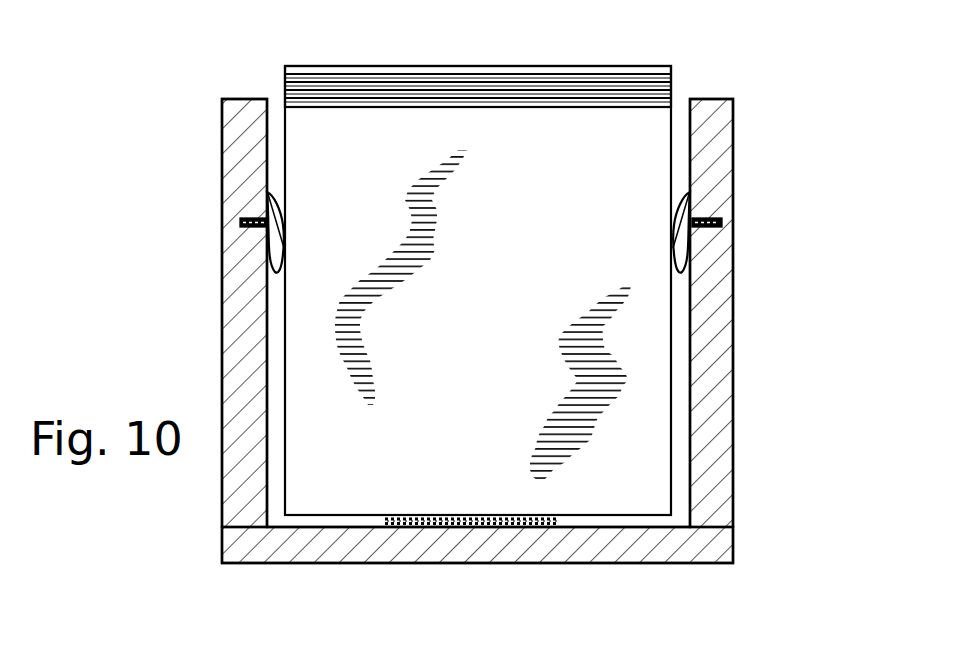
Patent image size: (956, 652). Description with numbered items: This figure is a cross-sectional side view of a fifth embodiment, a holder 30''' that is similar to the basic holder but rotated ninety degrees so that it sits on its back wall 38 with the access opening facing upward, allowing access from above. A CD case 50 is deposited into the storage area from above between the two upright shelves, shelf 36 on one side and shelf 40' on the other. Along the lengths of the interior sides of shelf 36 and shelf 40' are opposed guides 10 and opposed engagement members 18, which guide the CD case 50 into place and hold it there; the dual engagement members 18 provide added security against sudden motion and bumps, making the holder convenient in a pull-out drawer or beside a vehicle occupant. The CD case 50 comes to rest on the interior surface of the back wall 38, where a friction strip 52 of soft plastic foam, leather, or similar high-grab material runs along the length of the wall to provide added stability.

The guide 10 is at (284, 192).
The engagement member 18 is at (283, 286).
The holder 30''' is at (491, 369).
The shelf 36 is at (247, 311).
The back wall 38 is at (393, 542).
The shelf 40' is at (771, 313).
The CD case 50 is at (372, 61).
The friction strip 52 is at (470, 515).